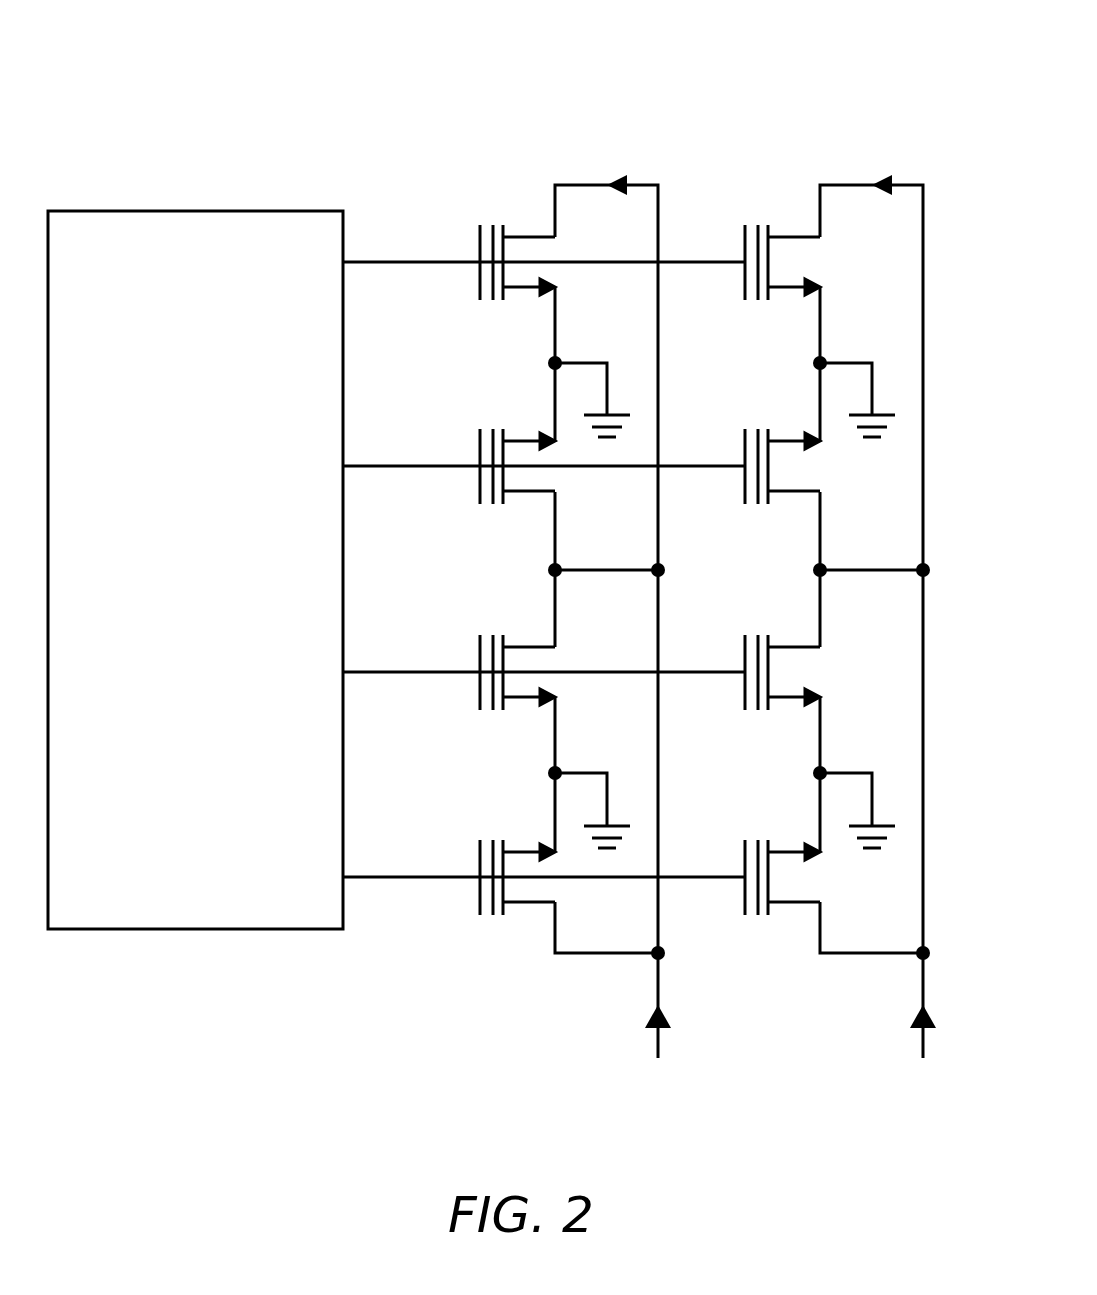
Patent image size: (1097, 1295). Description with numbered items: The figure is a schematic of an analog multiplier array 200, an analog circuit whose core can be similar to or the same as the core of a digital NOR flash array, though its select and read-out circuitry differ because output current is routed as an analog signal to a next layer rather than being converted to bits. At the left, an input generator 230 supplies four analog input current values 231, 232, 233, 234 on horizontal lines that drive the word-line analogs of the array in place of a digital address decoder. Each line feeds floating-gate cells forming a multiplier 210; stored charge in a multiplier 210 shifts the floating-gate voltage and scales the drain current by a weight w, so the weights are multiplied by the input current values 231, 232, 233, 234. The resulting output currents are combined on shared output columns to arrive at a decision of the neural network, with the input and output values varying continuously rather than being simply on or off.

The analog multiplier array 200 is at (813, 88).
The multiplier 210 is at (512, 185).
The input generator 230 is at (157, 929).
The input current value 231 is at (427, 223).
The input current value 232 is at (425, 430).
The input current value 233 is at (425, 636).
The input current value 234 is at (425, 841).